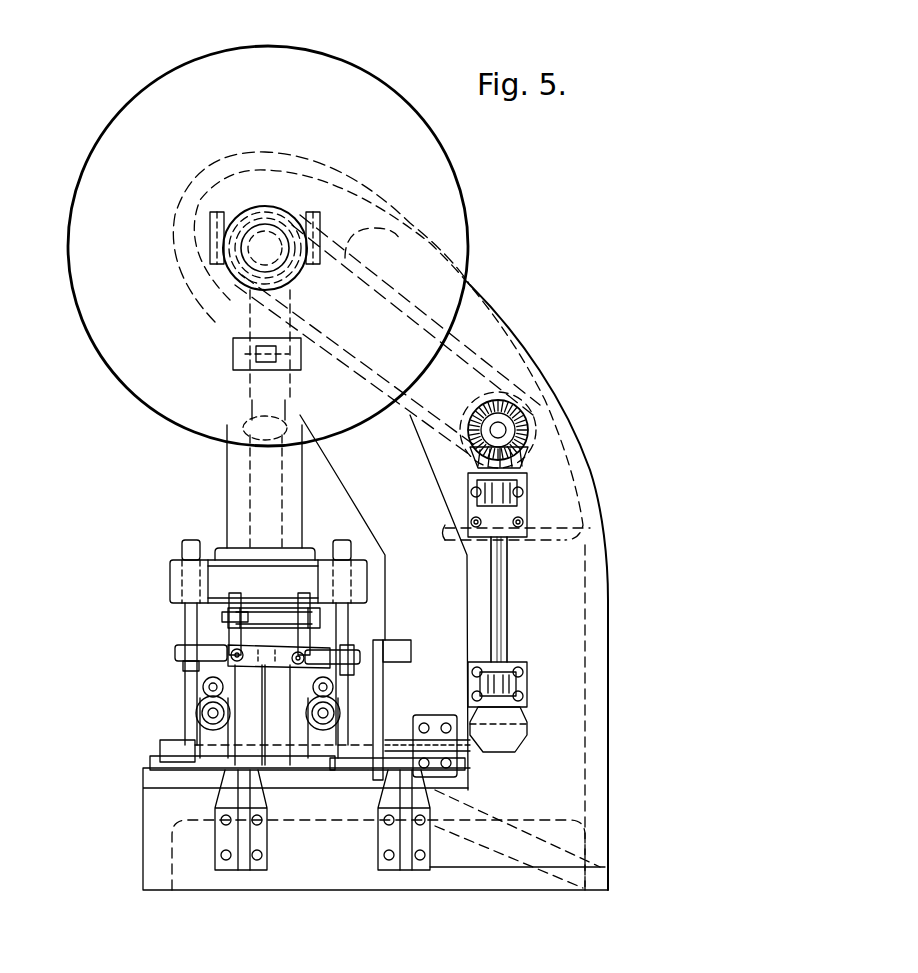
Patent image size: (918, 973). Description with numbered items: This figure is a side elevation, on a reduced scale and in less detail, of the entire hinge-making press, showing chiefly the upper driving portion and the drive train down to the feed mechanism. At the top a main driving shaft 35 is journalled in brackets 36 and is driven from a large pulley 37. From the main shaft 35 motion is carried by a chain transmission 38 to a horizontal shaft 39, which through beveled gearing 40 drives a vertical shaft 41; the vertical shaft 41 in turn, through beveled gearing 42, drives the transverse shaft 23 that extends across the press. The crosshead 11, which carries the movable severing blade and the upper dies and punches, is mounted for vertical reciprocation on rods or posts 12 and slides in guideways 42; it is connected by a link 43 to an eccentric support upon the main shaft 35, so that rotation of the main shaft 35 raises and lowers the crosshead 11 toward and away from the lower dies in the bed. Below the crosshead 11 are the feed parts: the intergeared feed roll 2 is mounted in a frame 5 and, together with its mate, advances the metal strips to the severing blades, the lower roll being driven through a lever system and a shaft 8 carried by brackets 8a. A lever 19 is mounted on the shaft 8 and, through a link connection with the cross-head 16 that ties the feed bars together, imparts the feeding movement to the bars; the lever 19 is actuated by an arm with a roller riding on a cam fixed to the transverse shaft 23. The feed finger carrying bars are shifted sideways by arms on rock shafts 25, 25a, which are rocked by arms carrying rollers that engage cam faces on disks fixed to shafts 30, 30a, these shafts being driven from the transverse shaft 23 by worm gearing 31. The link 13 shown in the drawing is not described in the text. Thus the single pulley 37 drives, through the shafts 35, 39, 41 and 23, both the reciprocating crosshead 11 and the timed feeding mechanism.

The pulley 37 is at (90, 178).
The brackets 36 is at (483, 312).
The main driving shaft 35 is at (237, 245).
The chain transmission 38 is at (365, 290).
The link 43 is at (260, 335).
The beveled gearing / guideways 42 is at (510, 745).
The horizontal shaft 39 is at (506, 430).
The beveled gearing 40 is at (522, 458).
The vertical shaft 41 is at (500, 610).
The rods or posts 12 is at (190, 545).
The crosshead 11 is at (268, 581).
The frame 5 is at (312, 606).
The feed roll 2 is at (226, 617).
The cross-head 16 is at (279, 647).
The link 13 is at (178, 653).
The rock shaft 25 is at (203, 687).
The rock shaft 25a is at (333, 687).
The lever 19 is at (250, 705).
The shaft 30 is at (207, 713).
The shaft 30a is at (340, 710).
The transverse shaft 23 is at (398, 742).
The worm gearing 31 is at (215, 748).
The shaft 8 is at (328, 770).
The brackets 8a is at (228, 800).